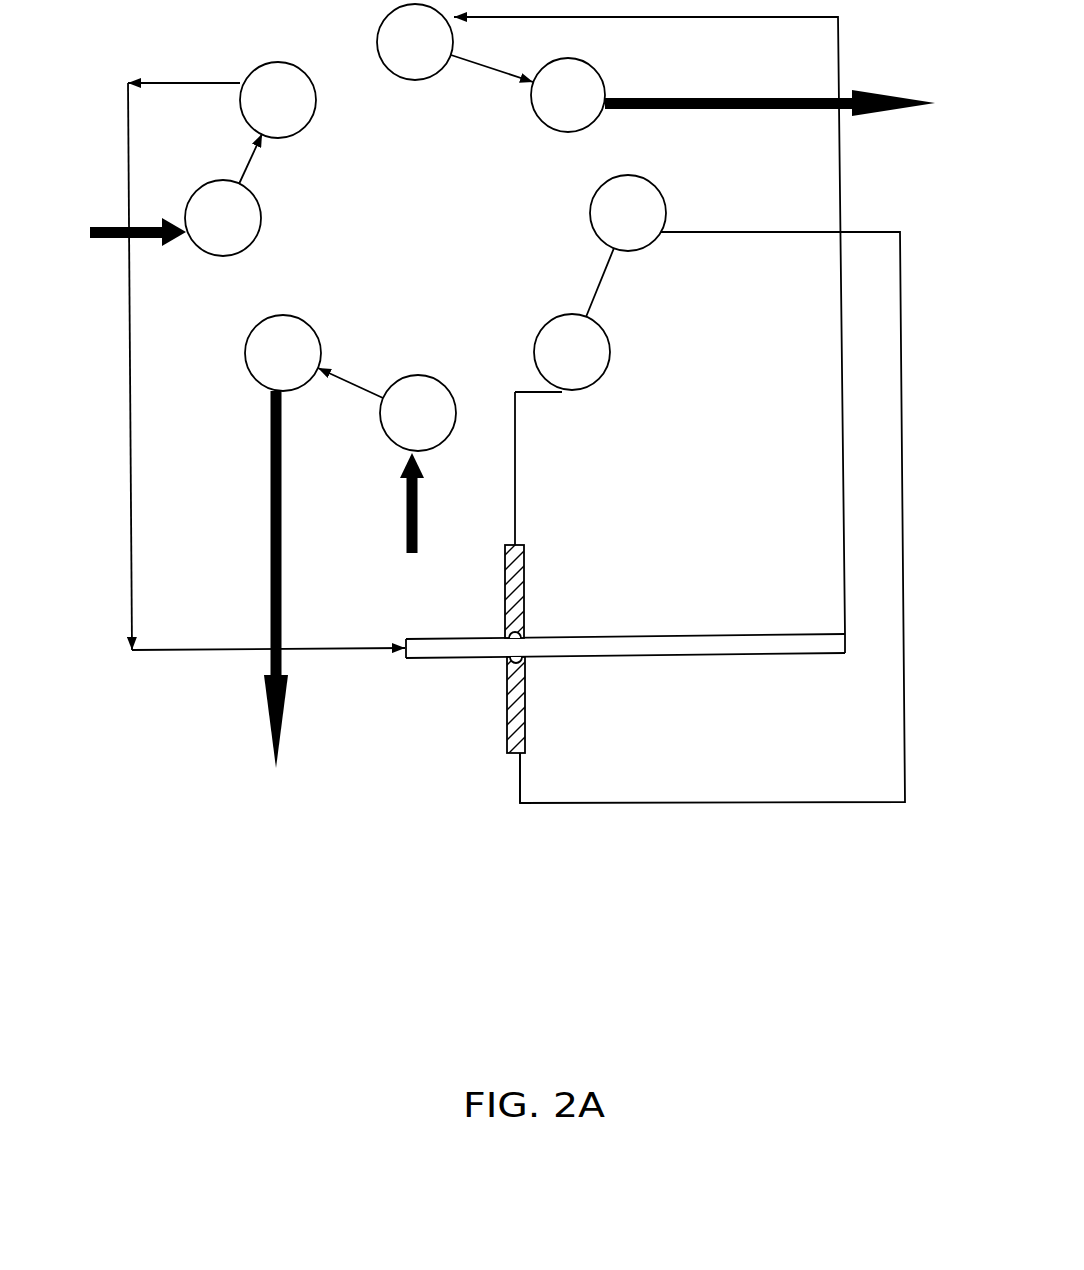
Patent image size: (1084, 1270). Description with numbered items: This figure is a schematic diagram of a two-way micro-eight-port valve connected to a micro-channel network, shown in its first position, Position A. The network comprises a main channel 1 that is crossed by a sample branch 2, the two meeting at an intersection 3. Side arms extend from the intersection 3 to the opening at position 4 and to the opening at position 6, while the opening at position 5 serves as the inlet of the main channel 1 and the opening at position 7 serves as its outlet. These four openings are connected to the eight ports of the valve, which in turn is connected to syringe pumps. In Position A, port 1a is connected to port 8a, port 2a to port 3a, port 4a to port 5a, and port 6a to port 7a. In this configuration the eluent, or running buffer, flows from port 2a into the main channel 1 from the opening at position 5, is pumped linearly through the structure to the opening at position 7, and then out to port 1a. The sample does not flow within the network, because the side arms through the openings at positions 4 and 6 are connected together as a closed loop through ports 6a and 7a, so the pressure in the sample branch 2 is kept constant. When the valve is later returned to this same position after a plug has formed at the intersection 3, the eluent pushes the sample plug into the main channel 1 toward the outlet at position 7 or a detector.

The main channel 1 is at (654, 667).
The sample branch 2 is at (527, 598).
The intersection 3 is at (503, 660).
The opening at position 4 is at (519, 547).
The opening at position 5 is at (403, 669).
The opening at position 6 is at (500, 768).
The opening at position 7 is at (847, 665).
The port 1a is at (415, 42).
The port 2a is at (278, 100).
The port 3a is at (223, 218).
The port 4a is at (283, 353).
The port 5a is at (418, 413).
The port 6a is at (572, 352).
The port 7a is at (628, 213).
The port 8a is at (568, 95).